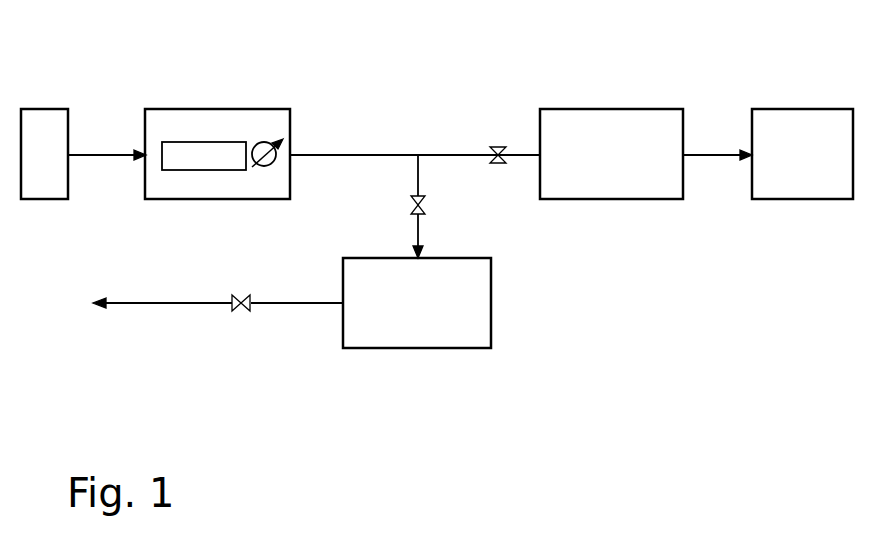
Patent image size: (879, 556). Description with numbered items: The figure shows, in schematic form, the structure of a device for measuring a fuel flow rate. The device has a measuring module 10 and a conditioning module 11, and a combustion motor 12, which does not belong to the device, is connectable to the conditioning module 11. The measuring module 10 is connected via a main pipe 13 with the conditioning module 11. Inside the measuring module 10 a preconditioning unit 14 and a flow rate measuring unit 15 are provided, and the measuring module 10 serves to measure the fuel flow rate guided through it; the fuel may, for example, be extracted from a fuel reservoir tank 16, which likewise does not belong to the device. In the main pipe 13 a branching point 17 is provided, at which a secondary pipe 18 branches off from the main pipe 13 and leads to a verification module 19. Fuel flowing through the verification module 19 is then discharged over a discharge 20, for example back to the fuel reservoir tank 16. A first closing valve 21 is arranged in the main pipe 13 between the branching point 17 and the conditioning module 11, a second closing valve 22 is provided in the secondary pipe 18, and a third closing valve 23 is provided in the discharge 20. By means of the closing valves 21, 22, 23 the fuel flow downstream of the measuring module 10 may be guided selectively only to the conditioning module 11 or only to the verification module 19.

The measuring module 10 is at (189, 108).
The conditioning module 11 is at (617, 108).
The combustion motor 12 is at (796, 108).
The main pipe 13 is at (448, 155).
The preconditioning unit 14 is at (227, 142).
The flow rate measuring unit 15 is at (290, 153).
The fuel reservoir tank 16 is at (46, 130).
The branching point 17 is at (418, 157).
The secondary pipe 18 is at (418, 177).
The verification module 19 is at (491, 307).
The discharge 20 is at (190, 303).
The first closing valve 21 is at (498, 146).
The second closing valve 22 is at (411, 208).
The third closing valve 23 is at (241, 308).